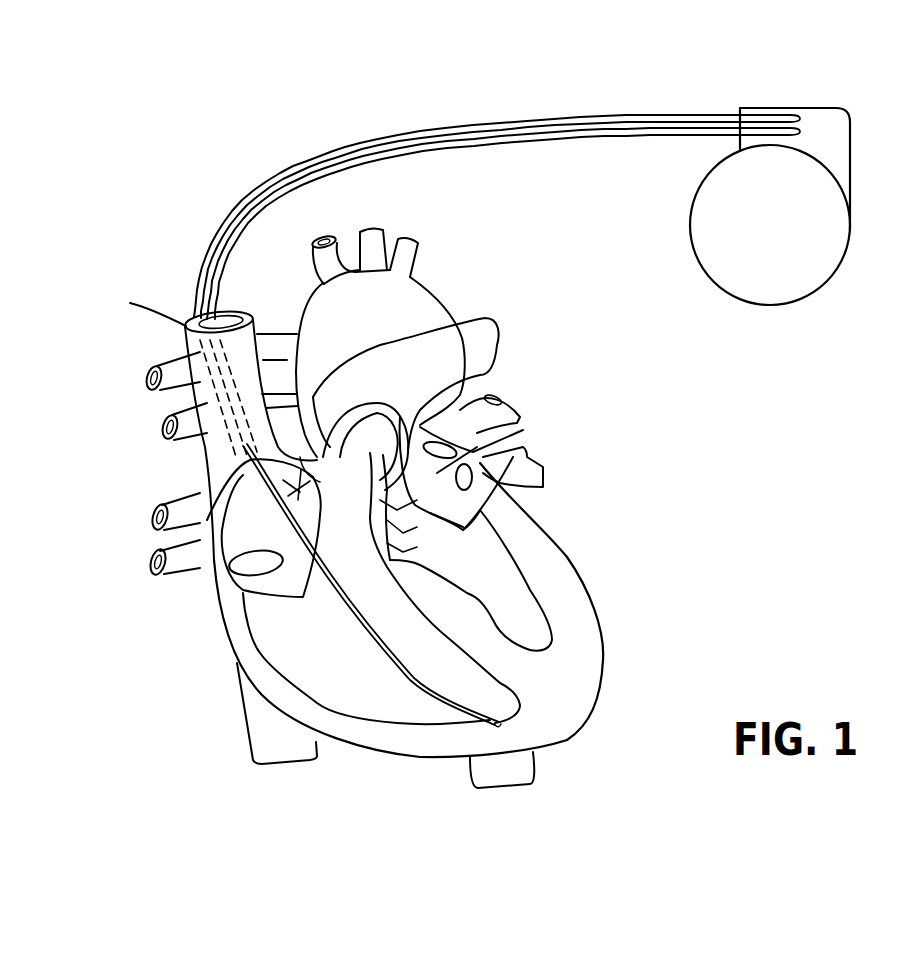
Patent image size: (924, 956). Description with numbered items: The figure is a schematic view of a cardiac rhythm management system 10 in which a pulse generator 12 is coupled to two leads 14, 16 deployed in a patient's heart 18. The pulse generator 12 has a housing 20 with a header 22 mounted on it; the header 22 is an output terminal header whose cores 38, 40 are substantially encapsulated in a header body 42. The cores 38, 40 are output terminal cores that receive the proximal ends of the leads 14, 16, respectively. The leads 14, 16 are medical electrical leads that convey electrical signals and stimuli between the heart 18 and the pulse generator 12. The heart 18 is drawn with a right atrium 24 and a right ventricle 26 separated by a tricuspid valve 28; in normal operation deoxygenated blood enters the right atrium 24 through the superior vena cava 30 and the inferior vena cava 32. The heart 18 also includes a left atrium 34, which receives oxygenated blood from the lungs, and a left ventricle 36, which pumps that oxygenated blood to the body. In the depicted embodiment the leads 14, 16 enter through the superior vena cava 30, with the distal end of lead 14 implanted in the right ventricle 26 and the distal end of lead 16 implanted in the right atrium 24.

The cardiac rhythm management (CRM) system 10 is at (247, 113).
The pulse generator 12 is at (802, 166).
The lead 14 is at (543, 143).
The lead 16 is at (467, 174).
The heart 18 is at (547, 357).
The housing 20 is at (833, 277).
The header 22 is at (850, 187).
The right atrium 24 is at (243, 500).
The right ventricle 26 is at (300, 647).
The tricuspid valve 28 is at (268, 596).
The superior vena cava 30 is at (190, 320).
The inferior vena cava 32 is at (263, 772).
The left atrium 34 is at (453, 443).
The left ventricle 36 is at (520, 587).
The core 38 is at (800, 131).
The core 40 is at (800, 118).
The header body 42 is at (833, 162).